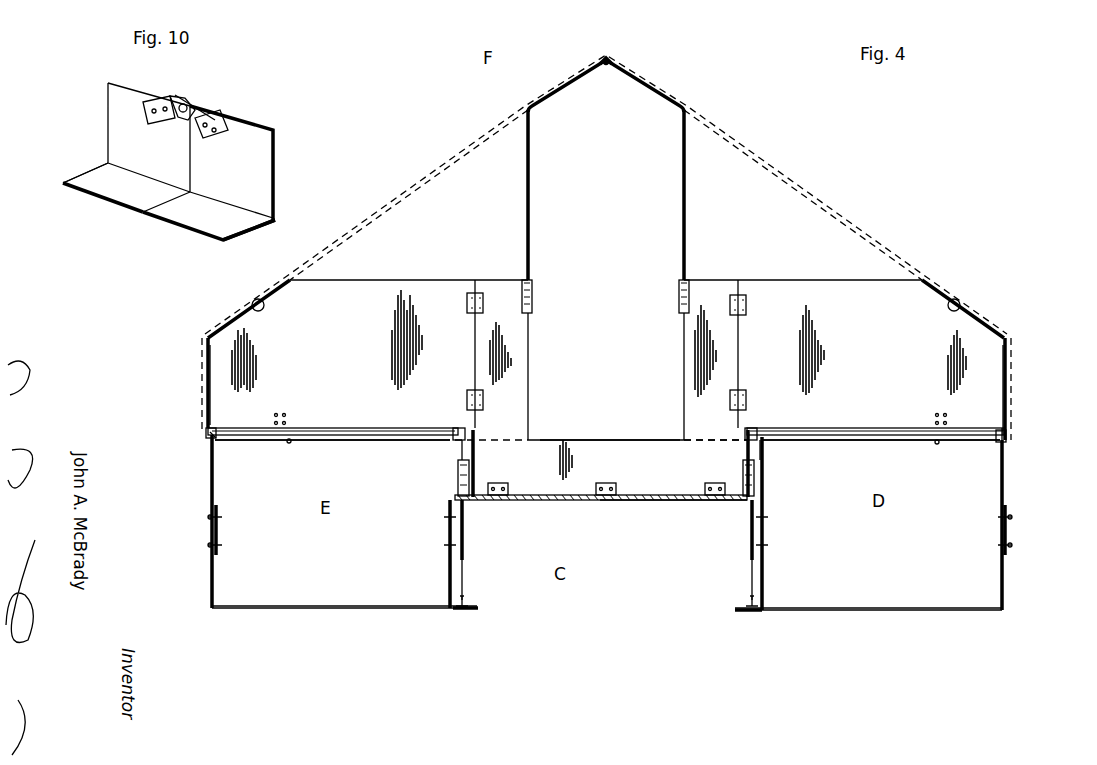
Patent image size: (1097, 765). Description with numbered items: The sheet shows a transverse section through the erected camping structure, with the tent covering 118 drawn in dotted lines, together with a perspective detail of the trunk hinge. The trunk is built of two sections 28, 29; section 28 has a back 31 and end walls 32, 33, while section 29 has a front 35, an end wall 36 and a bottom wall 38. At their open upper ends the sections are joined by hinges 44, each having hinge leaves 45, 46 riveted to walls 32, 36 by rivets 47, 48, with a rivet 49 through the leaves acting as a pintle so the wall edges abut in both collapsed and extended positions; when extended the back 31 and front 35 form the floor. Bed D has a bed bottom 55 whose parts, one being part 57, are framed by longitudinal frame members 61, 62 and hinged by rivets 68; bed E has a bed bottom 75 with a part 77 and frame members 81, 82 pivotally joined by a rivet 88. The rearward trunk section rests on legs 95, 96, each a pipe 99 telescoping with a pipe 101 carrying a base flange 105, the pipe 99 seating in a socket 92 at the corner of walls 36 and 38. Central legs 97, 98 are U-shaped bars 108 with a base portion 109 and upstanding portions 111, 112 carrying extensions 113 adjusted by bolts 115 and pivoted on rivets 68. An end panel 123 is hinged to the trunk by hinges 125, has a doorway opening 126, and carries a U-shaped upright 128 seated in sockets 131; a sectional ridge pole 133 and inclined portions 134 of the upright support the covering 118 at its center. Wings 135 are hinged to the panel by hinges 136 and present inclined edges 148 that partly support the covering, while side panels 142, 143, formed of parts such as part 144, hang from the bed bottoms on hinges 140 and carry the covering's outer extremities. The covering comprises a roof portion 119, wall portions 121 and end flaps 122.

In FIG. 10, the trunk section 28 is at (126, 190).
In FIG. 4, the trunk section 28 is at (535, 500).
In FIG. 10, the trunk section 29 is at (193, 210).
In FIG. 10, the back 31 is at (90, 176).
In FIG. 4, the back 31 is at (655, 500).
In FIG. 10, the end wall 32 is at (118, 134).
In FIG. 4, the end wall 32 is at (460, 455).
In FIG. 4, the end wall 33 is at (762, 458).
In FIG. 10, the front 35 is at (226, 220).
In FIG. 10, the end wall 36 is at (252, 166).
In FIG. 4, the bottom wall 38 is at (705, 440).
In FIG. 10, the hinge 44 is at (194, 108).
In FIG. 10, the hinge leaf 45 is at (168, 100).
In FIG. 10, the hinge leaf 46 is at (212, 124).
In FIG. 10, the rivets 47 is at (154, 114).
In FIG. 10, the rivets 48 is at (205, 128).
In FIG. 10, the rivet 49 is at (186, 105).
In FIG. 4, the bed bottom 55 is at (920, 440).
In FIG. 4, the part of bed bottom 57 is at (862, 440).
In FIG. 4, the longitudinal frame member 61 is at (750, 428).
In FIG. 4, the longitudinal frame member 62 is at (1008, 430).
In FIG. 4, the rivets 68 is at (998, 437).
In FIG. 4, the bed bottom 75 is at (358, 440).
In FIG. 4, the part of bed bottom 77 is at (298, 440).
In FIG. 4, the longitudinal frame member 81 is at (215, 435).
In FIG. 4, the longitudinal frame member 82 is at (470, 428).
In FIG. 4, the rivet 88 is at (208, 432).
In FIG. 4, the socket 92 is at (755, 478).
In FIG. 4, the leg 95 is at (750, 560).
In FIG. 4, the leg 96 is at (465, 545).
In FIG. 4, the leg 97 is at (1006, 578).
In FIG. 4, the leg 98 is at (220, 565).
In FIG. 4, the pipe 99 is at (750, 515).
In FIG. 4, the pipe 101 is at (466, 585).
In FIG. 4, the flange 105 is at (750, 610).
In FIG. 4, the U-shaped bar 108 is at (865, 608).
In FIG. 4, the base portion 109 is at (905, 600).
In FIG. 4, the upstanding portion 111 is at (1005, 590).
In FIG. 4, the upstanding portion 112 is at (765, 582).
In FIG. 4, the extensions 113 is at (768, 500).
In FIG. 4, the bolts 115 is at (1010, 545).
In FIG. 4, the tent covering 118 is at (820, 185).
In FIG. 4, the roof portion 119 is at (895, 250).
In FIG. 4, the wall portions 121 is at (1013, 375).
In FIG. 4, the flaps 122 is at (720, 170).
In FIG. 4, the end panel 123 is at (535, 460).
In FIG. 4, the hinges 125 is at (713, 483).
In FIG. 4, the opening 126 is at (540, 332).
In FIG. 4, the U-shaped upright 128 is at (680, 140).
In FIG. 4, the sockets 131 is at (678, 285).
In FIG. 4, the sectional ridge pole 133 is at (608, 58).
In FIG. 4, the inclined portions 134 is at (648, 95).
In FIG. 4, the wings 135 is at (832, 295).
In FIG. 4, the hinges 136 is at (746, 398).
In FIG. 4, the hinges 140 is at (1003, 428).
In FIG. 4, the side panel 142 is at (998, 355).
In FIG. 4, the side panel 143 is at (215, 360).
In FIG. 4, the side panel part 144 is at (1010, 405).
In FIG. 4, the inclined edges 148 is at (948, 295).